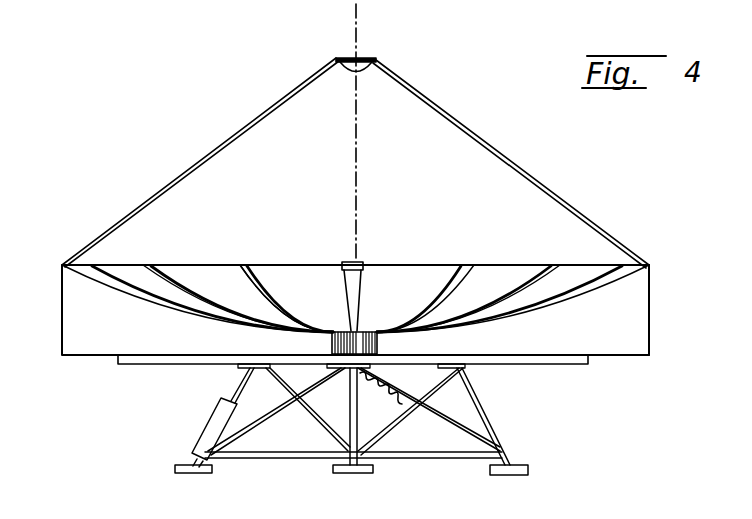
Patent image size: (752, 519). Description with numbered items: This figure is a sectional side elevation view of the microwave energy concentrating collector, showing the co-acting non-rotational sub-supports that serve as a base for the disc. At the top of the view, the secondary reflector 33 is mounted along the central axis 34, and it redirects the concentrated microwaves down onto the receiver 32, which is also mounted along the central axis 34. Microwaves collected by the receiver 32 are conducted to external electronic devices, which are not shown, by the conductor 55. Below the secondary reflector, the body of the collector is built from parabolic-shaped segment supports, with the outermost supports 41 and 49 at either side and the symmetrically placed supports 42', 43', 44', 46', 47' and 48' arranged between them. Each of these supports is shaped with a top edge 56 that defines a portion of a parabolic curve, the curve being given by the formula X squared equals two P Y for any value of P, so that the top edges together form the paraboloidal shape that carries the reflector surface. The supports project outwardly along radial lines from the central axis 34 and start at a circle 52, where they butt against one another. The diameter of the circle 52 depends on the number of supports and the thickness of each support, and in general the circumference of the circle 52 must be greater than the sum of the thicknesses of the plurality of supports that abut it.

The receiver 32 is at (360, 273).
The secondary reflector 33 is at (358, 68).
The central axis 34 is at (358, 40).
The support 41 is at (70, 297).
The support 42' is at (197, 282).
The support 43' is at (238, 282).
The support 44' is at (286, 282).
The support 46' is at (425, 282).
The support 47' is at (472, 283).
The support 48' is at (518, 276).
The support 49 is at (640, 311).
The circle 52 is at (367, 330).
The conductor 55 is at (374, 412).
The top edge 56 is at (281, 298).